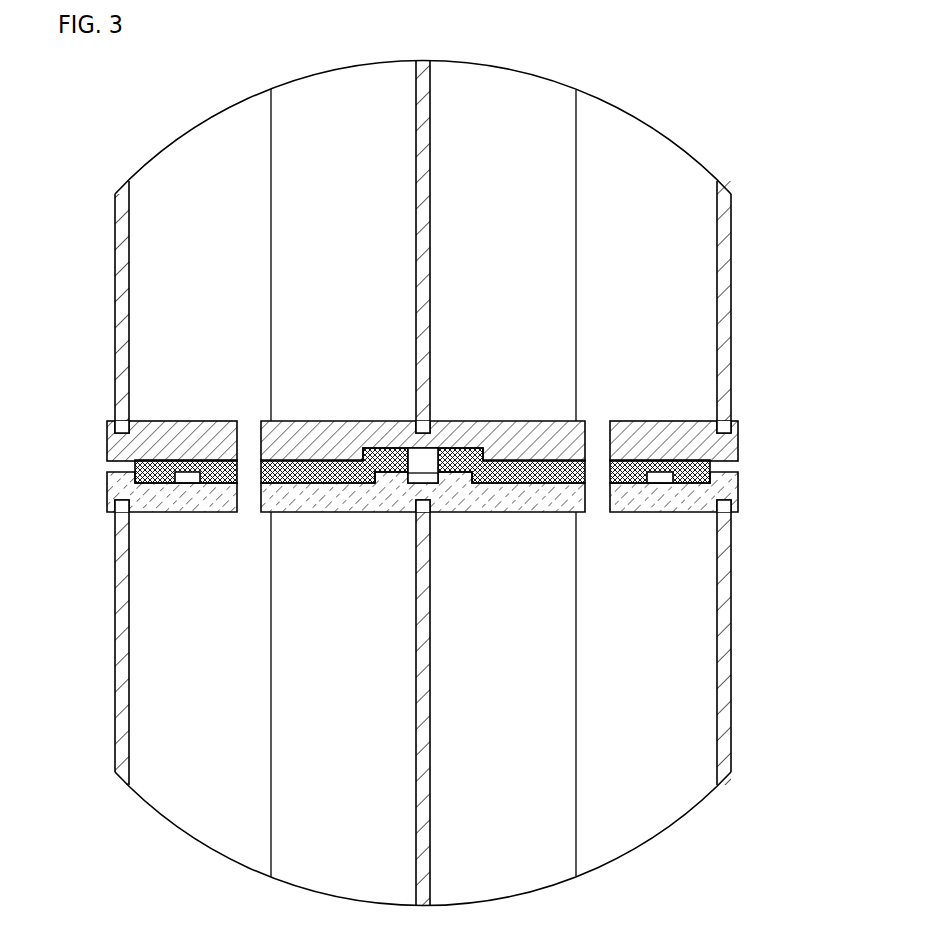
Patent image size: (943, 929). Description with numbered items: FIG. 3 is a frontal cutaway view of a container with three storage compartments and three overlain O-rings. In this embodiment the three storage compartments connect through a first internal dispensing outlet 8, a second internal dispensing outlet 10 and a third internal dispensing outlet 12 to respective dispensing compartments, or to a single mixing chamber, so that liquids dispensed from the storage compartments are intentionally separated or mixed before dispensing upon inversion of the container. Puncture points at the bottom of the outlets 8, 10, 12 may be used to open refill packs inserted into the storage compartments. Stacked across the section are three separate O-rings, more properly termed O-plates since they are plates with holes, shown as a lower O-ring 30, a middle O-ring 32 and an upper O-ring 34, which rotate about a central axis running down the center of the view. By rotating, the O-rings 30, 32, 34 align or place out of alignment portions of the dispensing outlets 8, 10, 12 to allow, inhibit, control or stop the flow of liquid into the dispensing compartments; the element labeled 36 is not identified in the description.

The first internal dispensing outlet 8 is at (603, 499).
The second internal dispensing outlet 10 is at (420, 460).
The third internal dispensing outlet 12 is at (243, 447).
The lower O-ring 30 is at (728, 488).
The middle O-ring 32 is at (708, 466).
The upper O-ring 34 is at (465, 392).
The recess in upper plate 36 is at (485, 452).